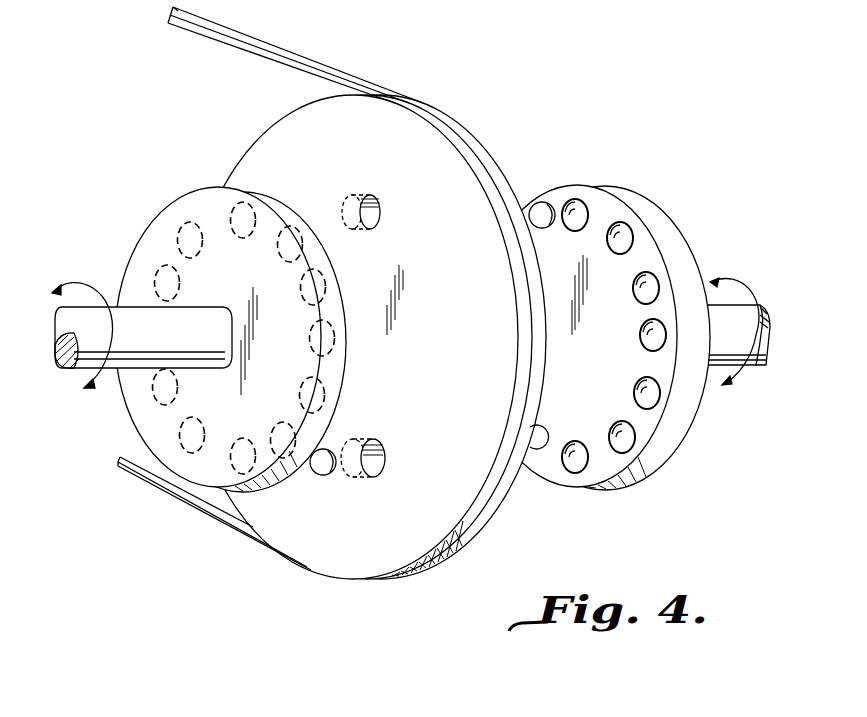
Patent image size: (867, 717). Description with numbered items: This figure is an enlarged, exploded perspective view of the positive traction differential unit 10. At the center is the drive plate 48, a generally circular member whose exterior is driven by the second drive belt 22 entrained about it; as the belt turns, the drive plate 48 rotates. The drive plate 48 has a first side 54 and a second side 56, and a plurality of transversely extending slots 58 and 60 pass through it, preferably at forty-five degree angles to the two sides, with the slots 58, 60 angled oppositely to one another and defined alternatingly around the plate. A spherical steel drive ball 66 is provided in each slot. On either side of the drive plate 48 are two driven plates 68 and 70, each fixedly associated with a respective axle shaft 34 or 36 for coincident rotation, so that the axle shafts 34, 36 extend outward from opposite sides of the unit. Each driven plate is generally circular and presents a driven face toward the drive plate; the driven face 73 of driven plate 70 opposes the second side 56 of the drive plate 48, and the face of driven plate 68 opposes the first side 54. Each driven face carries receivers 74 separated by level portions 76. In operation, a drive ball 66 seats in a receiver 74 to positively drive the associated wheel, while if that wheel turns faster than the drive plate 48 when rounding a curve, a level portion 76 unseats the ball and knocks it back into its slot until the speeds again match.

The positive traction differential unit 10 is at (548, 132).
The second drive belt 22 is at (313, 60).
The axle shaft 34 is at (83, 358).
The axle shaft 36 is at (763, 362).
The drive plate 48 is at (388, 533).
The first side 54 is at (387, 357).
The second side 56 is at (517, 488).
The slot 58 is at (382, 213).
The slot 60 is at (360, 440).
The drive ball 66 is at (538, 207).
The driven plate 68 is at (142, 253).
The driven plate 70 is at (439, 314).
The driven face 73 is at (610, 203).
The receiver 74 is at (640, 340).
The level portion 76 is at (645, 253).